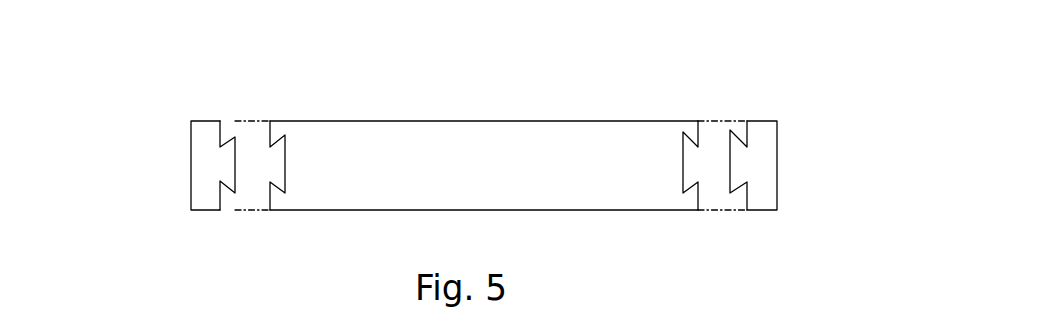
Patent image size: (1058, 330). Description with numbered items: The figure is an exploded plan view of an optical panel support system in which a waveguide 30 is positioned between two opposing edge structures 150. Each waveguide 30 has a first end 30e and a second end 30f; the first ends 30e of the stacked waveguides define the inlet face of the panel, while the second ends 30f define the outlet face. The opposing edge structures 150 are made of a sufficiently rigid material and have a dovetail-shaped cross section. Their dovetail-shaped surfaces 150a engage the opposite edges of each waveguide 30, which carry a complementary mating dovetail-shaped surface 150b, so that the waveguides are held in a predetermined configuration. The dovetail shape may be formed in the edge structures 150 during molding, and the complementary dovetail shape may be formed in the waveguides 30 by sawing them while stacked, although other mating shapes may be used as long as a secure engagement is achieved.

The waveguide 30 is at (478, 188).
The first end 30e is at (503, 120).
The second end 30f is at (515, 211).
The opposing edge structure 150 is at (495, 135).
The dovetail-shaped surface 150a is at (236, 122).
The complementary mating dovetail-shaped surface 150b is at (272, 181).